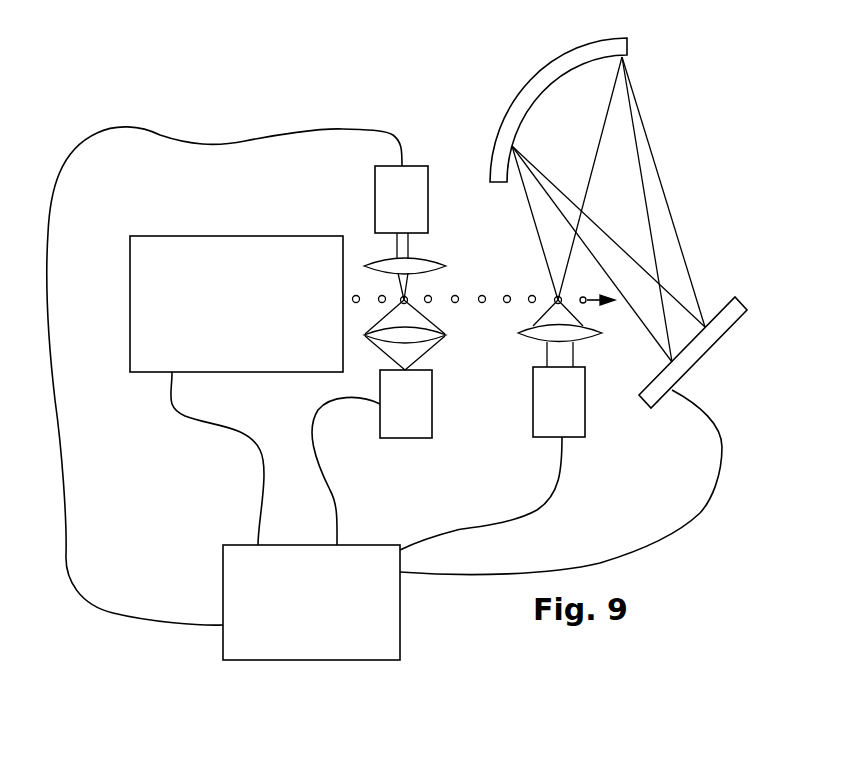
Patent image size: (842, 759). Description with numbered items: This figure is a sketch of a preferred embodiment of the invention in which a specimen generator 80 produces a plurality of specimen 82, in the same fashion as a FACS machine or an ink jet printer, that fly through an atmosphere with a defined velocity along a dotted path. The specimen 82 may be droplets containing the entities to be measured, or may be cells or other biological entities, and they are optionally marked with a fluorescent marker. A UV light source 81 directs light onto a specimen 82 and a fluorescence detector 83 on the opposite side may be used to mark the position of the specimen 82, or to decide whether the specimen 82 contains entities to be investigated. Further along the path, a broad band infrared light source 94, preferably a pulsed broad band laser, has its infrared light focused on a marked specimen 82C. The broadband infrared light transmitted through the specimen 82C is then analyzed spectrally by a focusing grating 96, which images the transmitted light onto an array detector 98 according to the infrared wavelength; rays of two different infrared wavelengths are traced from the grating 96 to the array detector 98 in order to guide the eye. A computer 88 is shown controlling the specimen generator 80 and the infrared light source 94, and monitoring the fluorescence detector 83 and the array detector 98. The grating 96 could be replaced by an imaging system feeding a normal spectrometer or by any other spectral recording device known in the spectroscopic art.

The specimen generator 80 is at (287, 233).
The UV light source 81 is at (375, 192).
The specimen 82 is at (408, 297).
The specimen 82C is at (555, 302).
The fluorescence detector 83 is at (395, 438).
The computer 88 is at (400, 602).
The broad band infrared light source 94 is at (585, 428).
The focusing grating 96 is at (525, 85).
The array detector 98 is at (688, 372).